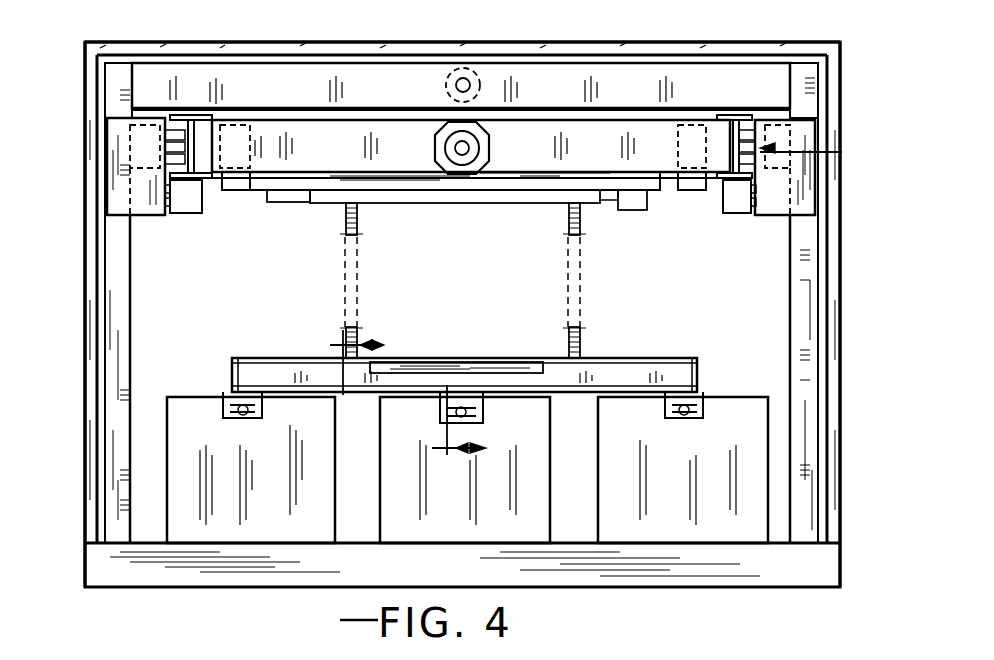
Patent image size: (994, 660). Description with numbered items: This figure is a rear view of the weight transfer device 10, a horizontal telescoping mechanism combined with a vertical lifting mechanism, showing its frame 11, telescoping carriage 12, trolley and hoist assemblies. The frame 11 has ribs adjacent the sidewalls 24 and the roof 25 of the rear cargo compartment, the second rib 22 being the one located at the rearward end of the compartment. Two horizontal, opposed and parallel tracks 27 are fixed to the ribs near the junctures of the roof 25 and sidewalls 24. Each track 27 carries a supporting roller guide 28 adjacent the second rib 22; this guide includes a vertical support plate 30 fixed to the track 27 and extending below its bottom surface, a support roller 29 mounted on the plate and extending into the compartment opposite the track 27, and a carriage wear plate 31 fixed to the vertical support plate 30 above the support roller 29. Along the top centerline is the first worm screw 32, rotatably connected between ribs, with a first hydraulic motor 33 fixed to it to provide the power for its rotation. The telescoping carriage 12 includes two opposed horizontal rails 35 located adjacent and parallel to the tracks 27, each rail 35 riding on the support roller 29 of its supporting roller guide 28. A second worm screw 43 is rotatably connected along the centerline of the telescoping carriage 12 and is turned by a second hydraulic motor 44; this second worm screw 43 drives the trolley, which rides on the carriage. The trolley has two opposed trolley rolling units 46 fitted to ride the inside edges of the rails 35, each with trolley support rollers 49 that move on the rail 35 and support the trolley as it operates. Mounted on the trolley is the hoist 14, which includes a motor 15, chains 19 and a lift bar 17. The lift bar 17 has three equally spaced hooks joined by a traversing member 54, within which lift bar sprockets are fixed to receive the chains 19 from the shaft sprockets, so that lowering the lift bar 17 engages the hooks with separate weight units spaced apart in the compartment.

The weight transfer device 10 is at (562, 63).
The frame 11 is at (755, 50).
The telescoping carriage 12 is at (826, 154).
The hoist 14 is at (345, 306).
The motor 15 is at (441, 397).
The lift bar 17 is at (703, 368).
The chains 19 is at (596, 205).
The second rib 22 is at (805, 78).
The sidewalls 24 is at (842, 98).
The roof 25 is at (235, 42).
The tracks 27 is at (790, 215).
The supporting roller guide 28 is at (733, 215).
The support roller 29 is at (190, 215).
The vertical support plate 30 is at (145, 215).
The carriage wear plate 31 is at (160, 130).
The first worm screw 32 is at (466, 78).
The first hydraulic motor 33 is at (452, 88).
The rails 35 is at (745, 110).
The second worm screw 43 is at (465, 158).
The second hydraulic motor 44 is at (450, 175).
The trolley rolling units 46 is at (210, 180).
The trolley support rollers 49 is at (210, 148).
The traversing member 54 is at (622, 368).